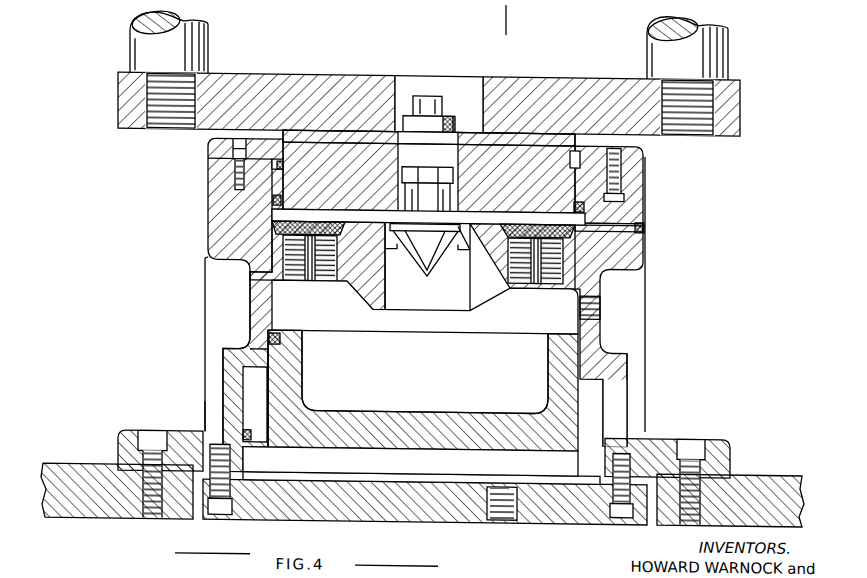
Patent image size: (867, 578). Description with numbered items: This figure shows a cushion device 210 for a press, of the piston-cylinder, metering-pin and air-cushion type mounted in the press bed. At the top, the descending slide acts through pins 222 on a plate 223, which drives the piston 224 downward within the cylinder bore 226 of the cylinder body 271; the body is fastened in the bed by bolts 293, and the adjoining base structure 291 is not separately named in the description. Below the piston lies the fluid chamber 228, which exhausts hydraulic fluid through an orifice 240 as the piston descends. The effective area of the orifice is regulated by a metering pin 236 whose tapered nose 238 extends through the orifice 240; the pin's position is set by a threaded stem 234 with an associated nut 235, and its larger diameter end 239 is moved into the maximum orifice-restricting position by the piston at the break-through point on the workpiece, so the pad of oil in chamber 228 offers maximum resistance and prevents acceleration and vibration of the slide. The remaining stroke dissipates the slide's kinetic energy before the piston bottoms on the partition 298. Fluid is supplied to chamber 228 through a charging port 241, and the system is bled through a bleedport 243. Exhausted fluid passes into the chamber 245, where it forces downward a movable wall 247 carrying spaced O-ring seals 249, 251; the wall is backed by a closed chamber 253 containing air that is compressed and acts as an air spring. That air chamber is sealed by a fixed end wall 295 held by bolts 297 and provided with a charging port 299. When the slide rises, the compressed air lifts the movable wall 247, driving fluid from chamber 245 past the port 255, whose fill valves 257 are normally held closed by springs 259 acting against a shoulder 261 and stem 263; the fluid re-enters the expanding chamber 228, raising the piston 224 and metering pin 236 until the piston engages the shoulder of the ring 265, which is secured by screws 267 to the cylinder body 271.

The cushion device 210 is at (576, 68).
The pins 222 is at (130, 28).
The plate 223 is at (303, 72).
The piston 224 is at (347, 128).
The cylinder bore 226 is at (277, 181).
The fluid chamber 228 is at (580, 221).
The threaded stem 234 is at (420, 92).
The nut 235 is at (448, 112).
The metering pin 236 is at (455, 178).
The tapered nose 238 is at (427, 267).
The larger diameter end 239 is at (368, 208).
The orifice 240 is at (466, 224).
The charging port 241 is at (600, 291).
The bleedport 243 is at (645, 221).
The chamber 245 is at (400, 375).
The movable wall 247 is at (303, 362).
The O-ring seal 249 is at (277, 330).
The O-ring seal 251 is at (249, 438).
The closed chamber 253 is at (405, 470).
The charging port 255 is at (285, 231).
The fill valves 257 is at (300, 207).
The springs 259 is at (283, 262).
The shoulder 261 is at (333, 280).
The stem 263 is at (285, 169).
The ring 265 is at (212, 142).
The screws 267 is at (233, 160).
The cylinder body 271 is at (205, 240).
The base plate 291 is at (760, 465).
The bolts 293 is at (152, 428).
The fixed end wall 295 is at (318, 518).
The bolts 297 is at (216, 513).
The partition 298 is at (348, 208).
The charging port 299 is at (496, 515).